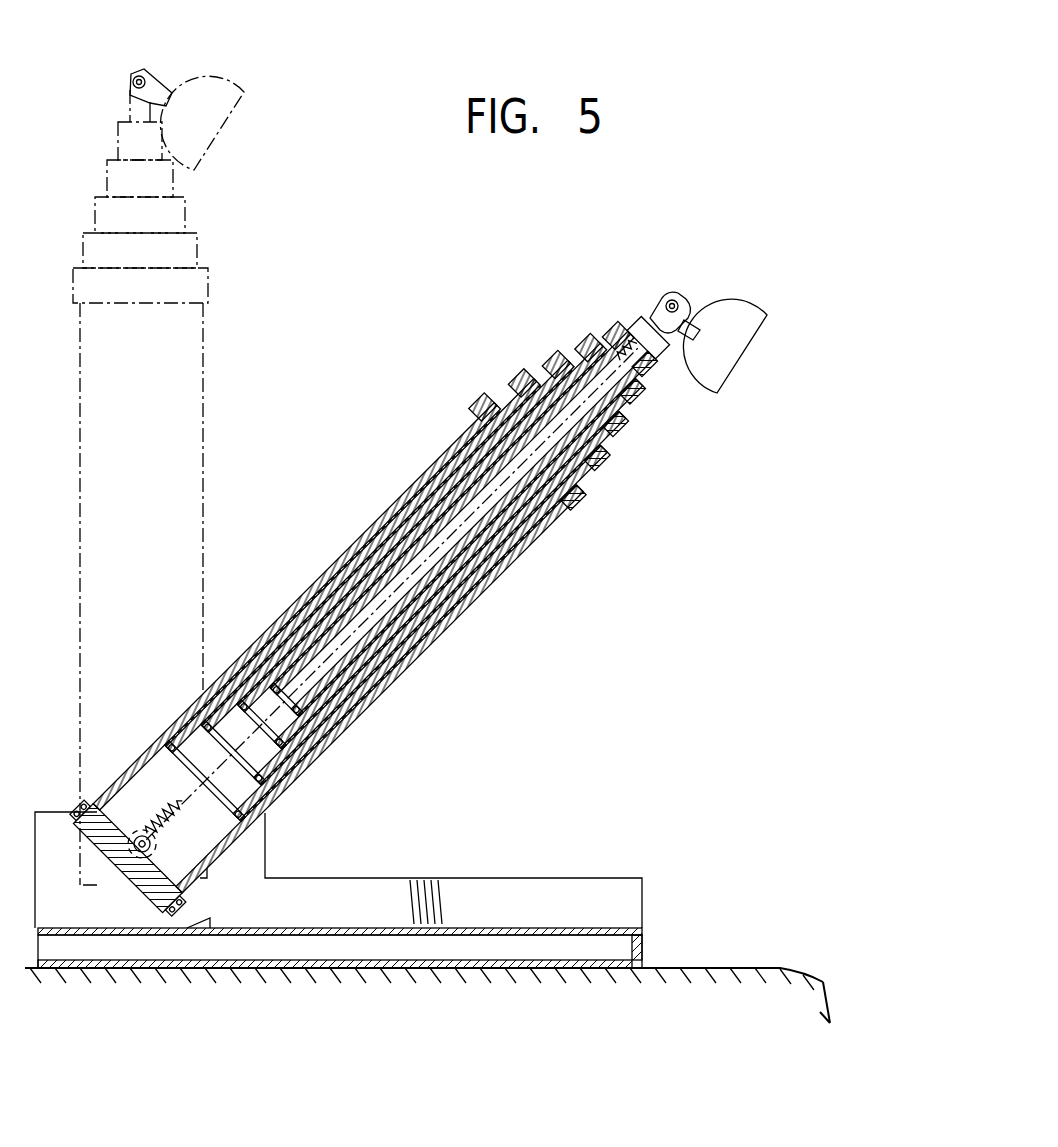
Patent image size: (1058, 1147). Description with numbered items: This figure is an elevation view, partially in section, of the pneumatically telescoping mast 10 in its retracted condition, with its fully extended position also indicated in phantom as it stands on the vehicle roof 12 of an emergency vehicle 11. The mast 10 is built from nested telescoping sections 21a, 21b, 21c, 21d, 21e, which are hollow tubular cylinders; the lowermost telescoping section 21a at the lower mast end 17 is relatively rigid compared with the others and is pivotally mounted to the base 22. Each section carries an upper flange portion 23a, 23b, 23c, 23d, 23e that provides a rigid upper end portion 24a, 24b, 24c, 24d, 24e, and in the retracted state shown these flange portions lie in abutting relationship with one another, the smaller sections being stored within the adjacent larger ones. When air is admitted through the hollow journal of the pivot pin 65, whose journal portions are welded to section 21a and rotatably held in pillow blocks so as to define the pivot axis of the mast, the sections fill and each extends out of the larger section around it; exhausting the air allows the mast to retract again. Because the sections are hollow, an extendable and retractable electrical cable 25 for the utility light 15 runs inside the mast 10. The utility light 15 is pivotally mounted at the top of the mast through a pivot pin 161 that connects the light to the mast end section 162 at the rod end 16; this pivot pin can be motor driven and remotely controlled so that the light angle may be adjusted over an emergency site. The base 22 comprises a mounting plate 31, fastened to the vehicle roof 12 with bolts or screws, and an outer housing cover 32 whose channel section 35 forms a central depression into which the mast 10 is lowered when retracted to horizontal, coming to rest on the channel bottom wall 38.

The pneumatically telescoping mast 10 is at (207, 375).
The emergency vehicle 11 is at (830, 998).
The vehicle roof 12 is at (760, 968).
The utility light 15 is at (750, 305).
The piston rod end 16 is at (630, 322).
The pivot pin 161 is at (673, 300).
The mast end section 162 is at (660, 300).
The lower mast end 17 is at (160, 745).
The telescoping section 21a is at (335, 565).
The telescoping section 21b is at (395, 525).
The telescoping section 21c is at (448, 475).
The telescoping section 21d is at (373, 652).
The telescoping section 21e is at (417, 580).
The base 22 is at (545, 870).
The upper flange portion 23a is at (487, 402).
The upper flange portion 23b is at (545, 368).
The upper flange portion 23c is at (575, 355).
The upper flange portion 23d is at (603, 338).
The upper flange portion 23e is at (622, 330).
The rigid upper end portion 24a is at (588, 478).
The rigid upper end portion 24b is at (603, 446).
The rigid upper end portion 24c is at (622, 412).
The rigid upper end portion 24d is at (640, 375).
The rigid upper end portion 24e is at (657, 348).
The electrical cable 25 is at (170, 828).
The mounting plate 31 is at (398, 970).
The outer housing cover 32 is at (645, 898).
The channel section 35 is at (247, 917).
The channel bottom wall 38 is at (208, 918).
The pivot pin 65 is at (140, 827).